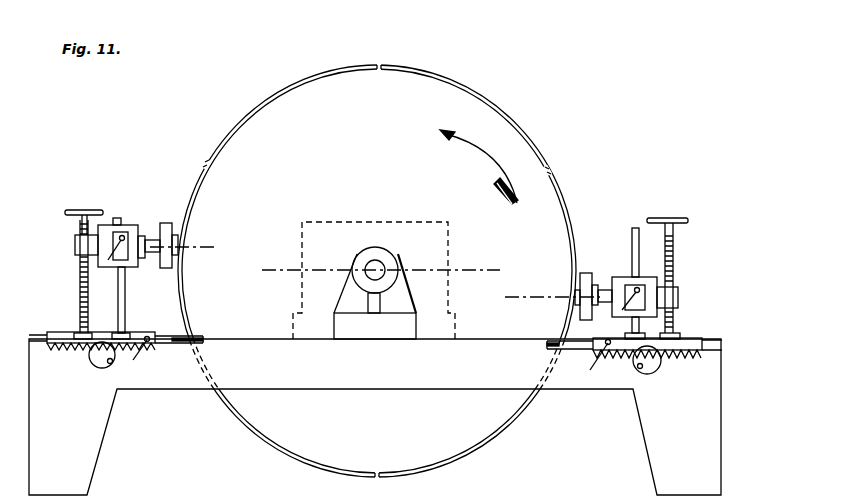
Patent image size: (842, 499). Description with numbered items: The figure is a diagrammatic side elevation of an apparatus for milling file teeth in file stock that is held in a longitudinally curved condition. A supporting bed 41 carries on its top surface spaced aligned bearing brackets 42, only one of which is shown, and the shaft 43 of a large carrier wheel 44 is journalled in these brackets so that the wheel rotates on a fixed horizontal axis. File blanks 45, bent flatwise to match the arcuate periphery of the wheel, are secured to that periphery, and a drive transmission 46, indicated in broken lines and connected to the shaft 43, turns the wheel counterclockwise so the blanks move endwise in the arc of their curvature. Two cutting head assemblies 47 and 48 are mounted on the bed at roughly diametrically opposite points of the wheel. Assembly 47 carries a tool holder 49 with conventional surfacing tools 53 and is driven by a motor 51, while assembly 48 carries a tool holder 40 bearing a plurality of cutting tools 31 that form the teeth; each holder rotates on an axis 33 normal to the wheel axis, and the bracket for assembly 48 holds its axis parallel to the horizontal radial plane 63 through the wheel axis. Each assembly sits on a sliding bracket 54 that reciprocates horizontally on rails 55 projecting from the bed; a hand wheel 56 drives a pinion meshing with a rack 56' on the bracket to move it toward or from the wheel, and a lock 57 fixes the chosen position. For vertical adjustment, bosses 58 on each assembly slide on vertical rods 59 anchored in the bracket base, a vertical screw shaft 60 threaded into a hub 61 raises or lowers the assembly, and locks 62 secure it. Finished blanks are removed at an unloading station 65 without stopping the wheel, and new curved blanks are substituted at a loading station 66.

The cutting tools 31 is at (576, 297).
The axis 33 is at (512, 298).
The tool holder 40 is at (588, 271).
The supporting bed 41 is at (312, 372).
The bearing bracket 42 is at (392, 331).
The shaft 43 is at (378, 267).
The carrier wheel 44 is at (430, 84).
The blanks 45 is at (516, 122).
The drive transmission 46 is at (363, 221).
The cutting head assembly 47 is at (134, 206).
The cutting head assembly 48 is at (622, 222).
The tool holder 49 is at (166, 222).
The motor 51 is at (112, 218).
The surfacing tools 53 is at (180, 235).
The sliding bracket 54 is at (59, 324).
The rails 55 is at (176, 345).
The hand wheel 56 is at (378, 372).
The rack 56' is at (377, 370).
The lock 57 is at (146, 356).
The bosses 58 is at (126, 262).
The vertical rods 59 is at (126, 314).
The vertical screw shaft 60 is at (80, 292).
The hub 61 is at (73, 245).
The locks 62 is at (110, 270).
The radial plane 63 is at (480, 270).
The unloading station 65 is at (494, 70).
The loading station 66 is at (256, 84).